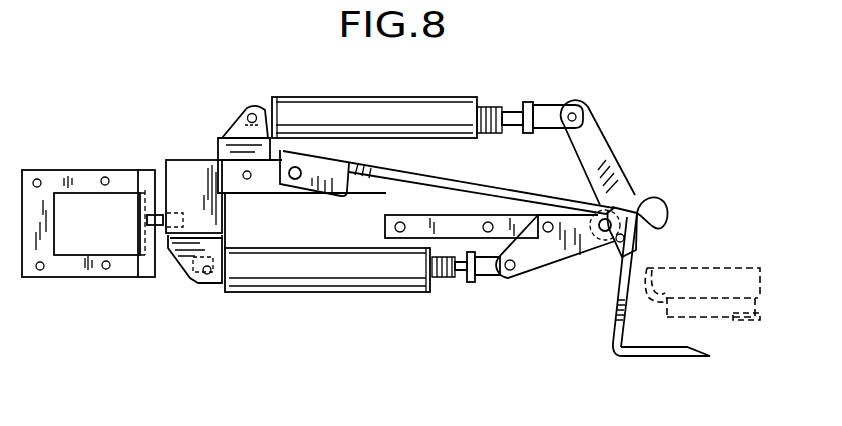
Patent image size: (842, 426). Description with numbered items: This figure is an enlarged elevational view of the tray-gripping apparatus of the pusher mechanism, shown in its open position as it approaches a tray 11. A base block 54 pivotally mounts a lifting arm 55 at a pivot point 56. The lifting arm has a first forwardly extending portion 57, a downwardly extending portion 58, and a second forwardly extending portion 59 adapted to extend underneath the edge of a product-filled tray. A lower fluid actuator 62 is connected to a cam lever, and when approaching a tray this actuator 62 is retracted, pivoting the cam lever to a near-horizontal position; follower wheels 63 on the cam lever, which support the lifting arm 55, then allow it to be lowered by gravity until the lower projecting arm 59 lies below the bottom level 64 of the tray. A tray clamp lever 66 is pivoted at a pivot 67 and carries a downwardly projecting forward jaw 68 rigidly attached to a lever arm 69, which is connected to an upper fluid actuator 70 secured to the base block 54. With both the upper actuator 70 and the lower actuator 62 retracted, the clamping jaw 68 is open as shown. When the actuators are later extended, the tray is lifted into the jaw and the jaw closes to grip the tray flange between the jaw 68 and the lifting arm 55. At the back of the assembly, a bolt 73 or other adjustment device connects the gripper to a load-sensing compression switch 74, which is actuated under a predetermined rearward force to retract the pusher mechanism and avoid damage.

The tray 11 is at (755, 280).
The base block 54 is at (198, 167).
The lifting arm 55 is at (454, 172).
The pivot point 56 is at (295, 180).
The first forwardly extending portion 57 is at (566, 168).
The downwardly extending portion 58 is at (613, 323).
The second forwardly extending portion 59 is at (655, 355).
The fluid actuator 62 is at (328, 282).
The follower wheels 63 is at (636, 193).
The bottom level of the tray 64 is at (733, 318).
The tray clamp lever 66 is at (609, 158).
The pivot 67 is at (608, 257).
The forward jaw 68 is at (665, 214).
The lever arm 69 is at (611, 117).
The fluid actuator 70 is at (313, 97).
The bolt 73 is at (160, 216).
The load-sensing compression switch 74 is at (88, 182).